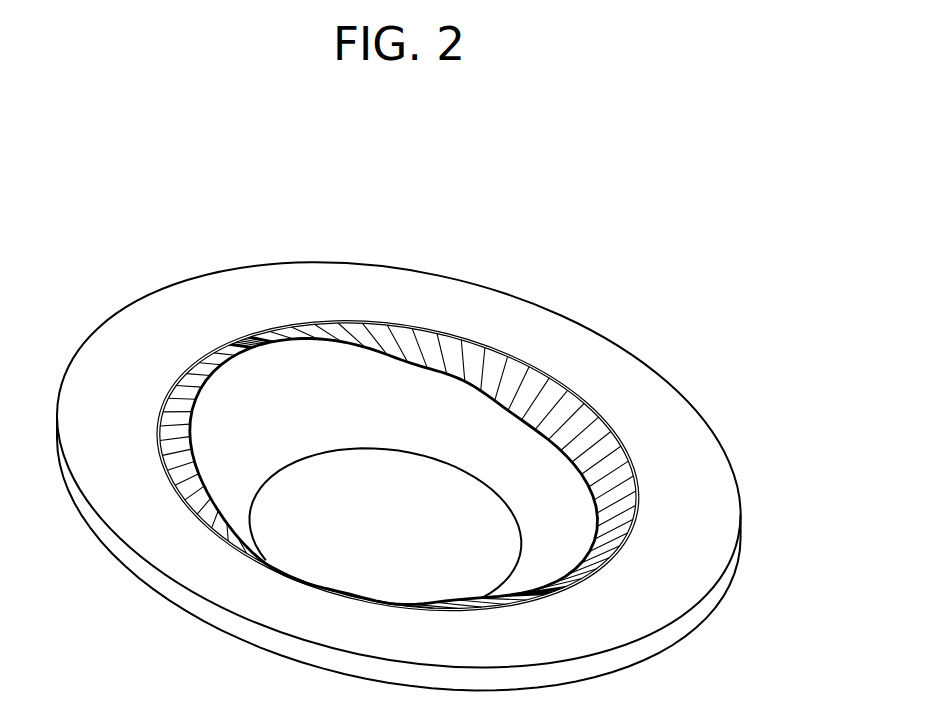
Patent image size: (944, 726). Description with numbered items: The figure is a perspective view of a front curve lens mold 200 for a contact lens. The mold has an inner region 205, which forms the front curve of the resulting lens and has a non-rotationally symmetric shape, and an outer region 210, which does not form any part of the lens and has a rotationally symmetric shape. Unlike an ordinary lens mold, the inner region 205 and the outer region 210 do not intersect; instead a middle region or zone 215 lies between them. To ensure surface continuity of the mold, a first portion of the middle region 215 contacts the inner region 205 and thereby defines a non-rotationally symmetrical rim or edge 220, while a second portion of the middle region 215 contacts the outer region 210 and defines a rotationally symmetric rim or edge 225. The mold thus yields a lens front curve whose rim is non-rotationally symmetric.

The front curve lens mold 200 is at (422, 464).
The inner region 205 is at (557, 532).
The outer region 210 is at (116, 326).
The middle region or zone 215 is at (505, 382).
The non-rotationally symmetrical rim or edge 220 is at (424, 329).
The rotationally symmetric rim or edge 225 is at (616, 434).